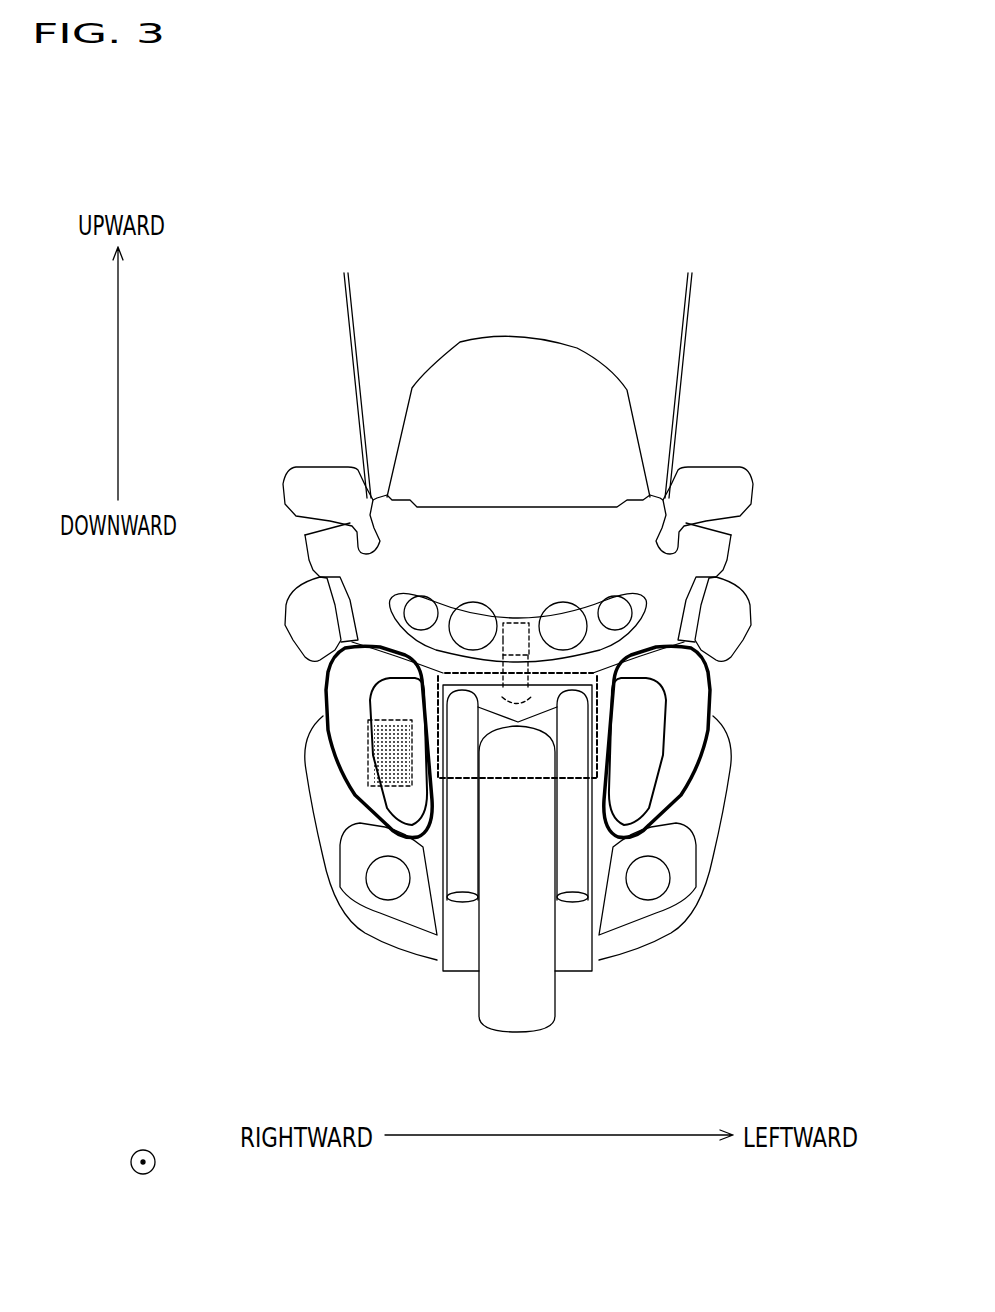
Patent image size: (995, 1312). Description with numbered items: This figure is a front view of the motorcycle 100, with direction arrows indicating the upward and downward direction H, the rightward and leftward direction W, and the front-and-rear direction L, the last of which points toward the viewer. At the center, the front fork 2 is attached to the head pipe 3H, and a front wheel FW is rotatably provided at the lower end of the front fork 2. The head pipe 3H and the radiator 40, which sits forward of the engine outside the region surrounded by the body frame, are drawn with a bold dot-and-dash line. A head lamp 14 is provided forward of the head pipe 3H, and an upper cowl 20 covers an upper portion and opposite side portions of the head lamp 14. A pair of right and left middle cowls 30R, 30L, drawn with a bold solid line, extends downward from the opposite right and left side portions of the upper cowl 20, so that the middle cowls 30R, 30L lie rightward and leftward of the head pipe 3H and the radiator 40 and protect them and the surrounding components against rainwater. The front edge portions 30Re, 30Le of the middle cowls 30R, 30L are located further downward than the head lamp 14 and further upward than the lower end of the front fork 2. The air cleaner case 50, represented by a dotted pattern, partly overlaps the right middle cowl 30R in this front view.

The motorcycle 100 is at (666, 241).
The head lamp 14 is at (427, 607).
The upper cowl 20 is at (640, 577).
The head pipe 3H is at (517, 652).
The right middle cowl 30R is at (323, 718).
The left middle cowl 30L is at (713, 718).
The front edge portion of the right middle cowl 30Re is at (411, 807).
The front edge portion of the left middle cowl 30Le is at (625, 807).
The air cleaner case 50 is at (368, 748).
The radiator 40 is at (517, 780).
The front fork 2 is at (573, 843).
The front wheel FW is at (527, 977).
The vertical direction axis H is at (118, 333).
The width direction axis W is at (573, 1137).
The front-and-rear direction L is at (155, 1155).